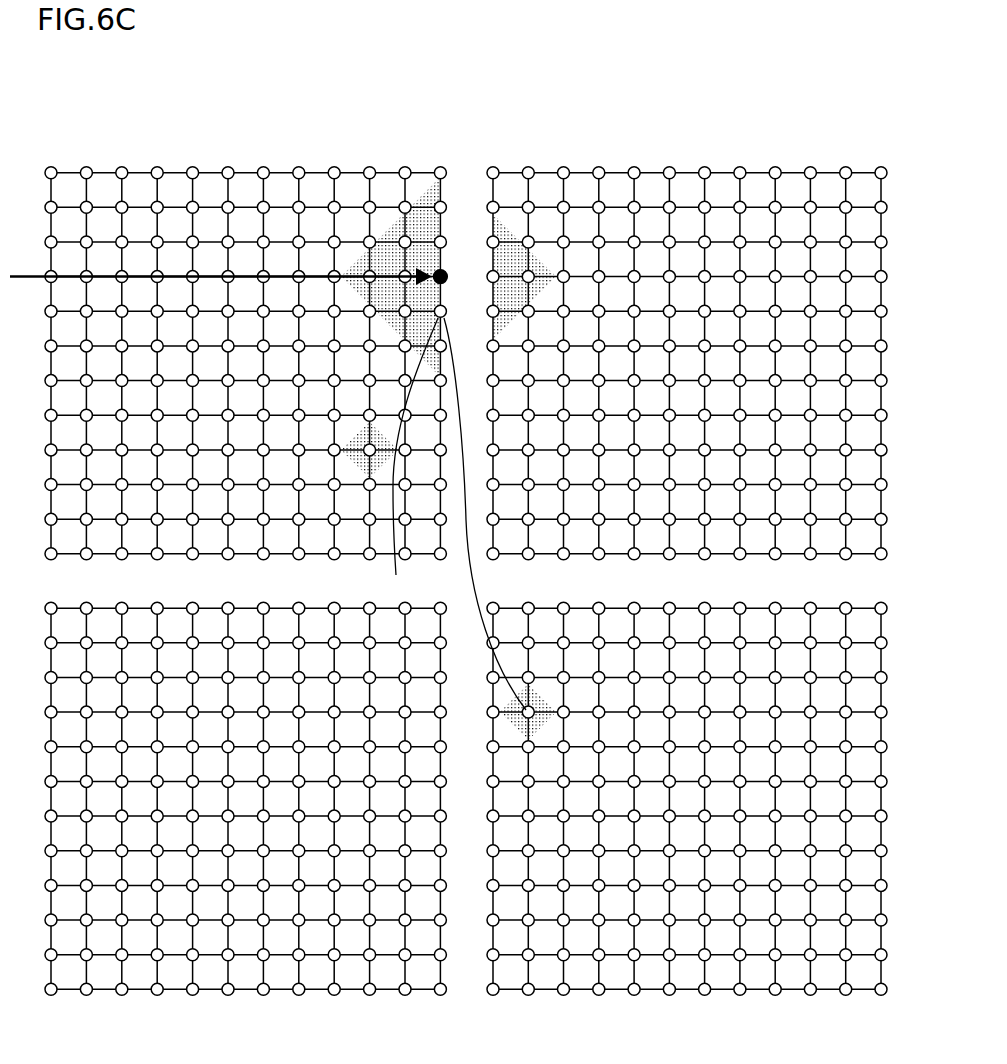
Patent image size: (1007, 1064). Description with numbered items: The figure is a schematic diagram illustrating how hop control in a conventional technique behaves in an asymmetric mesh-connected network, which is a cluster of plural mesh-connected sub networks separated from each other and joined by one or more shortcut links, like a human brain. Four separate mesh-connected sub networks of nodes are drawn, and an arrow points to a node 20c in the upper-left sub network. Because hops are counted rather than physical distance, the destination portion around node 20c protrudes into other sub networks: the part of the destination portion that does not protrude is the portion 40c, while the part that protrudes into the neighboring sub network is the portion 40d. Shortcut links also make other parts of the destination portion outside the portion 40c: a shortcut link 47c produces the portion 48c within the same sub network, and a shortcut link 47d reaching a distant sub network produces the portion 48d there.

The target node 20c is at (444, 273).
The portion 40c is at (392, 228).
The portion 40d is at (541, 265).
The shortcut link 47c is at (409, 459).
The shortcut link 47d is at (472, 582).
The portion 48c is at (358, 458).
The portion 48d is at (520, 730).